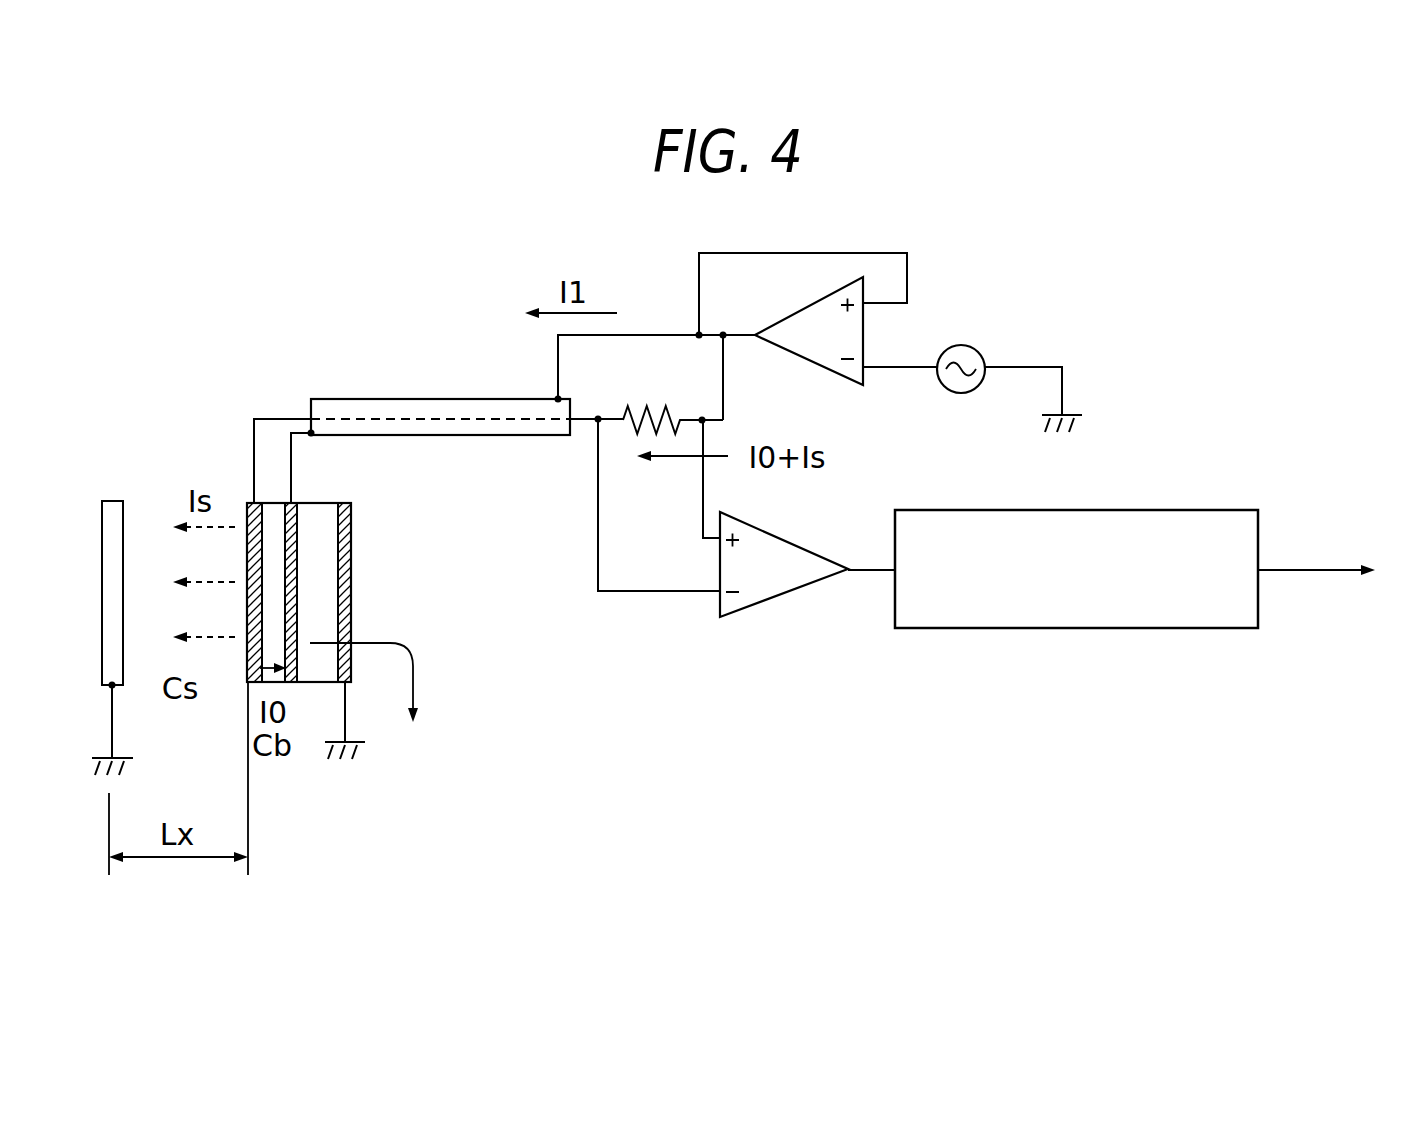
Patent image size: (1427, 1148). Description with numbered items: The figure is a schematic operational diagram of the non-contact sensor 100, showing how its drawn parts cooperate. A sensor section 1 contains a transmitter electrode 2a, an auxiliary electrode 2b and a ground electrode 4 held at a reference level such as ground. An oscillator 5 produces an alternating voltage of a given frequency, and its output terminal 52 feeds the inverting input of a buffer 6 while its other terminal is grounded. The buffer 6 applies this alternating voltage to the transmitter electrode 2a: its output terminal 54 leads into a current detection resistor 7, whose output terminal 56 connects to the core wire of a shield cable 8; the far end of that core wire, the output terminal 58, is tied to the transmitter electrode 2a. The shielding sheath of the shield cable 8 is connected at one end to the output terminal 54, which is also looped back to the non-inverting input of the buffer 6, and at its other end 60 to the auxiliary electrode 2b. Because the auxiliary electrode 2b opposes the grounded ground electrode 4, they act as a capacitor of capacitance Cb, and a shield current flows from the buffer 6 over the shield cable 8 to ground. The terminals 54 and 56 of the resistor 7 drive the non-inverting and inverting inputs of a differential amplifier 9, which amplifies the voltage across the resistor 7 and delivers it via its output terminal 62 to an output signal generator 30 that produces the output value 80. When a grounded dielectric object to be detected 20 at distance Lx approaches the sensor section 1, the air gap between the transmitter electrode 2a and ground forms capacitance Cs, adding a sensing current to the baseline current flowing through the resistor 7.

The sensor section 1 is at (353, 610).
The transmitter electrode 2a is at (262, 593).
The auxiliary electrode 2b is at (313, 503).
The ground electrode 4 is at (351, 541).
The oscillator 5 is at (960, 347).
The buffer 6 is at (840, 285).
The current detection resistor 7 is at (649, 407).
The shield cable 8 is at (412, 399).
The differential amplifier 9 is at (748, 610).
The object to be detected 20 is at (111, 501).
The output signal generator 30 is at (1075, 630).
The output terminal of the oscillator 52 is at (908, 369).
The output terminal of the buffer 54 is at (738, 333).
The output terminal of the current detection resistor 56 is at (585, 428).
The output terminal of the shield cable core wire 58 is at (285, 417).
The other end of the shielding sheath 60 is at (291, 455).
The output terminal of the differential amplifier 62 is at (865, 565).
The output value 80 is at (1307, 572).
The non-contact sensor 100 is at (992, 823).